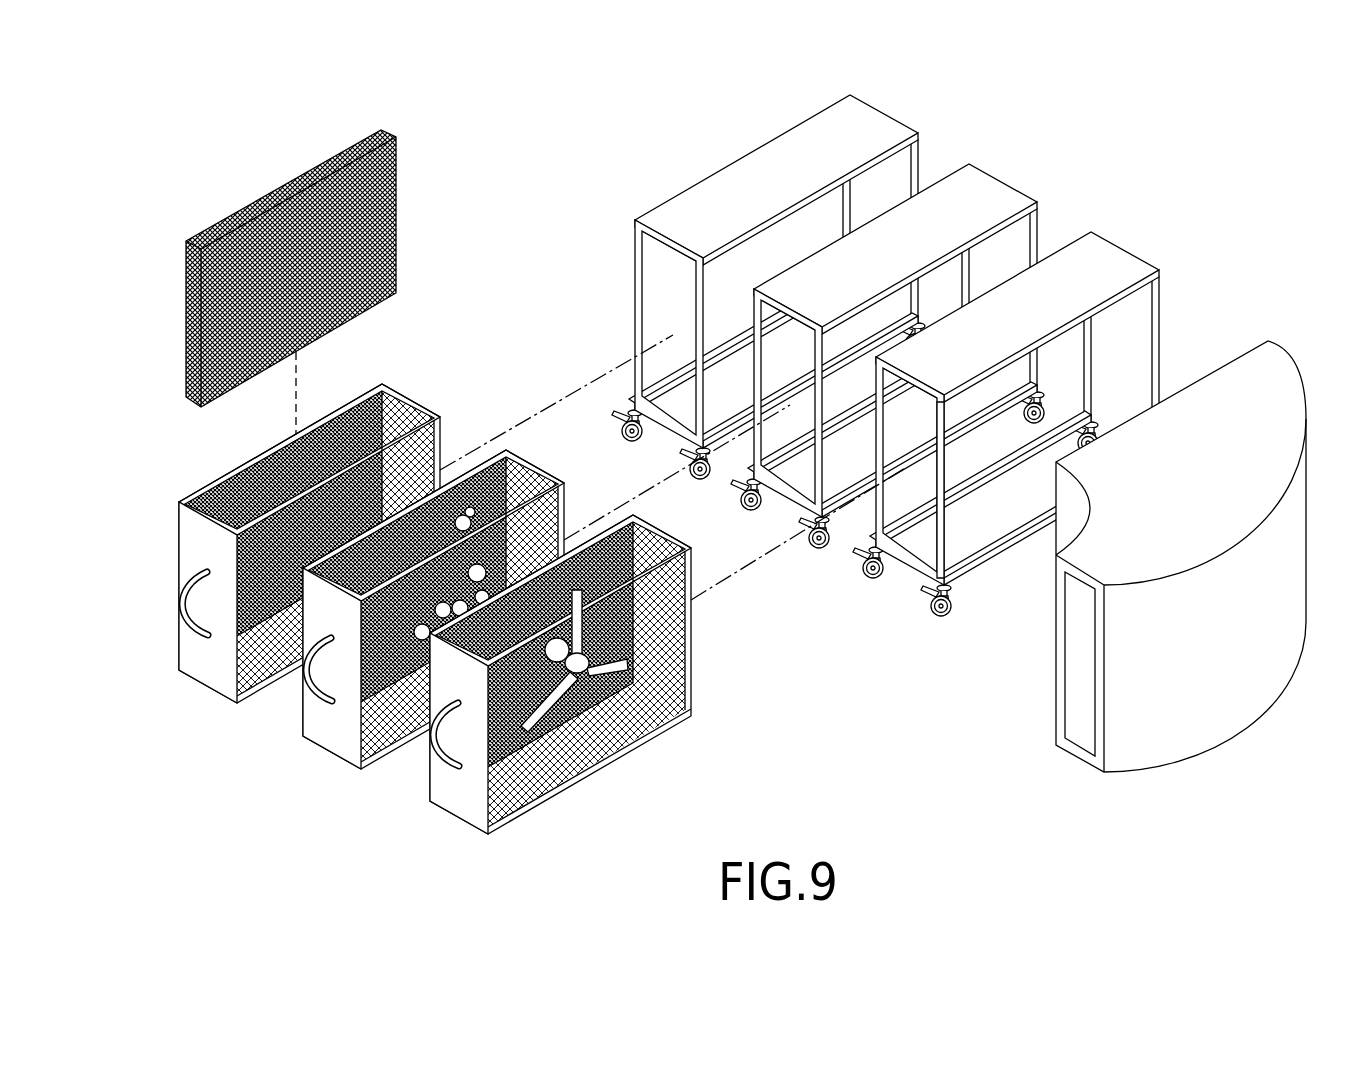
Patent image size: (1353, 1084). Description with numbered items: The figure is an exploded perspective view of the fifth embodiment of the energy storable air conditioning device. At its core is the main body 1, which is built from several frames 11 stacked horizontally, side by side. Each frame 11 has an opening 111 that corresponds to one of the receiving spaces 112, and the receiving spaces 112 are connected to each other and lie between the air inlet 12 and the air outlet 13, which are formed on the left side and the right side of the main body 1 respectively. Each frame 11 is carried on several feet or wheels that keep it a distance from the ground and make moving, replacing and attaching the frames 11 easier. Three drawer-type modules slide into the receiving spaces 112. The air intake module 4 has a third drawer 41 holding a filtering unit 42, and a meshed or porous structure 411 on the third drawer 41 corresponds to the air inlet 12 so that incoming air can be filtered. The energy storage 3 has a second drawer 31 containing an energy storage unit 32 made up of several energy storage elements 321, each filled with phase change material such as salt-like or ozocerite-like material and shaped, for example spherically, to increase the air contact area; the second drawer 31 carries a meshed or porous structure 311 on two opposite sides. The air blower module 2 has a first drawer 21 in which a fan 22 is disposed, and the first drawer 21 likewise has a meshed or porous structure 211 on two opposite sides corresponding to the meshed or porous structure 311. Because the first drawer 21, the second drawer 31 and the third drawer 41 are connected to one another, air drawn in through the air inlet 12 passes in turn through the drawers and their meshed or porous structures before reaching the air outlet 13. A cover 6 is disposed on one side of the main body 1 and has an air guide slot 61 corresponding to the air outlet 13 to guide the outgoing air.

The main body 1 is at (916, 375).
The frame 11 is at (1113, 275).
The opening 111 is at (920, 529).
The receiving space 112 is at (885, 557).
The air inlet 12 is at (661, 284).
The air outlet 13 is at (998, 548).
The air blower module 2 is at (564, 684).
The first drawer 21 is at (473, 812).
The meshed or porous structure 211 is at (593, 560).
The fan 22 is at (627, 553).
The energy storage 3 is at (416, 605).
The second drawer 31 is at (330, 738).
The meshed or porous structure 311 is at (453, 493).
The energy storage unit 32 is at (472, 500).
The energy storage element 321 is at (503, 503).
The air intake module 4 is at (258, 543).
The third drawer 41 is at (190, 544).
The meshed or porous structure 411 is at (230, 487).
The filtering unit 42 is at (250, 207).
The cover 6 is at (1144, 608).
The air guide slot 61 is at (1085, 703).